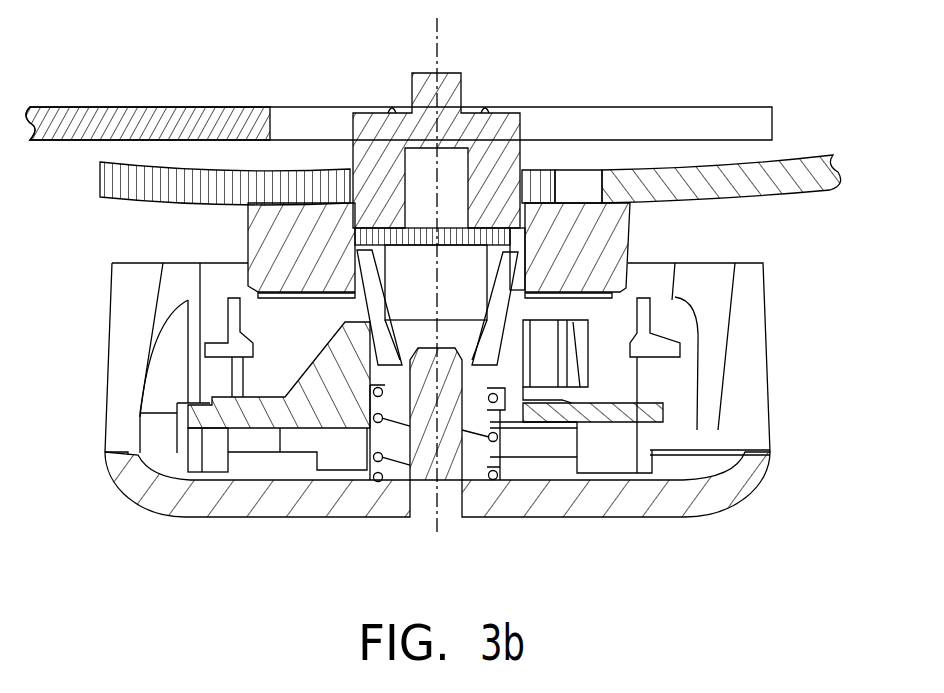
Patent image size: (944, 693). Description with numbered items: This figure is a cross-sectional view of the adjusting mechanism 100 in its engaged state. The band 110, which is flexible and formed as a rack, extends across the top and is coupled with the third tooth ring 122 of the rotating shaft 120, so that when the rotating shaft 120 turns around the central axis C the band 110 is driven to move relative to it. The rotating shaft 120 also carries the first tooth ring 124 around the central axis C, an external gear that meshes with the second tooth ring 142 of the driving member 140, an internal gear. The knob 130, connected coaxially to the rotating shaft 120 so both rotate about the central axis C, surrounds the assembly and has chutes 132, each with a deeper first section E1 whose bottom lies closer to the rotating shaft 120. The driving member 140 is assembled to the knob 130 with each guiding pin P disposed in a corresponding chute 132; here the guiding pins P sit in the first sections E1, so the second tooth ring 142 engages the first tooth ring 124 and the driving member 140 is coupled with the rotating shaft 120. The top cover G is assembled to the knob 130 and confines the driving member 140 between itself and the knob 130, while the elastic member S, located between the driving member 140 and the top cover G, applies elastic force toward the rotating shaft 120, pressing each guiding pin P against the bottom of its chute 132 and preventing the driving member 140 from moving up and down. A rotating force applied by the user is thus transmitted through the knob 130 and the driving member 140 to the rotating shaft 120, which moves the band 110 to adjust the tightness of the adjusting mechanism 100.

The adjusting mechanism 100 is at (846, 67).
The band 110 is at (640, 120).
The rotating shaft 120 is at (452, 85).
The third tooth ring 122 is at (380, 128).
The first tooth ring 124 is at (360, 268).
The knob 130 is at (748, 365).
The chute 132 is at (195, 440).
The driving member 140 is at (635, 410).
The second tooth ring 142 is at (512, 263).
The central axis C is at (437, 38).
The first section E1 is at (190, 400).
The guiding pin P is at (195, 410).
The elastic member S is at (487, 437).
The top cover G is at (730, 478).